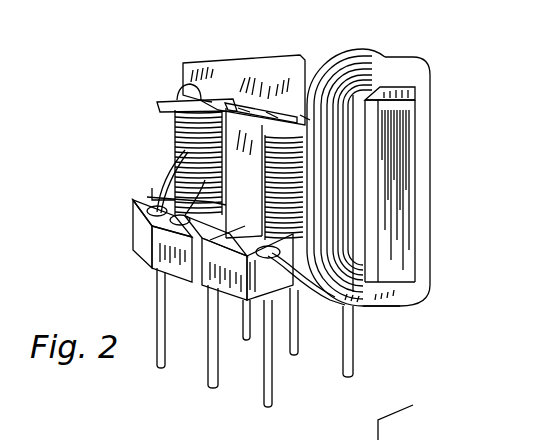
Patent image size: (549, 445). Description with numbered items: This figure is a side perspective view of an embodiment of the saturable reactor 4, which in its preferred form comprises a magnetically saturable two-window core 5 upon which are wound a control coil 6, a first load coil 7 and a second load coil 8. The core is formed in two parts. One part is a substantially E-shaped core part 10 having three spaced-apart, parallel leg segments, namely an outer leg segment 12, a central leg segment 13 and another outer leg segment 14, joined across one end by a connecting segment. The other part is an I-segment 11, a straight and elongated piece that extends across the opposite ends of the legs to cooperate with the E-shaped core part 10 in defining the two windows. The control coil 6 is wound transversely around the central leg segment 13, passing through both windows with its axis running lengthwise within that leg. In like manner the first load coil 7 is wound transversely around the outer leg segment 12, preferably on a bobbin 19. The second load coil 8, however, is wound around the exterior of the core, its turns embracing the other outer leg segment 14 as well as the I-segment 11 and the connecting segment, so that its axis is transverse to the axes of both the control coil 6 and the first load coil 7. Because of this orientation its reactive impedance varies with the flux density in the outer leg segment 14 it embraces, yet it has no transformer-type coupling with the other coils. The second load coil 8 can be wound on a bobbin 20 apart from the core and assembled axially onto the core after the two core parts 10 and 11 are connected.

The saturable reactor 4 is at (140, 116).
The two-window core 5 is at (182, 72).
The control coil 6 is at (272, 178).
The first load coil 7 is at (180, 143).
The second load coil 8 is at (380, 56).
The E-shaped core part 10 is at (243, 110).
The I-segment core part 11 is at (272, 115).
The outer leg segment 12 is at (207, 100).
The central leg segment 13 is at (306, 118).
The outer leg segment 14 is at (383, 157).
The bobbin 19 is at (157, 183).
The bobbin 20 is at (407, 72).